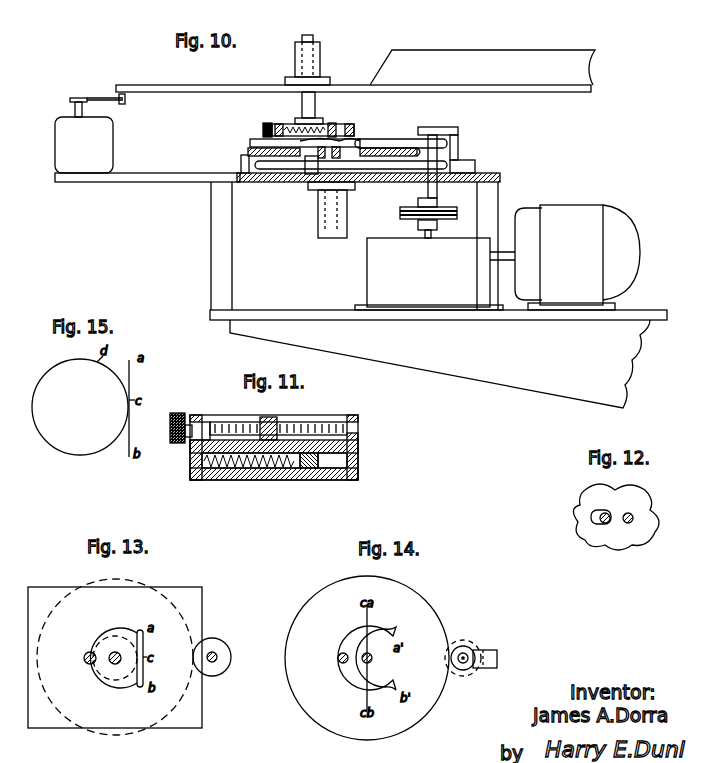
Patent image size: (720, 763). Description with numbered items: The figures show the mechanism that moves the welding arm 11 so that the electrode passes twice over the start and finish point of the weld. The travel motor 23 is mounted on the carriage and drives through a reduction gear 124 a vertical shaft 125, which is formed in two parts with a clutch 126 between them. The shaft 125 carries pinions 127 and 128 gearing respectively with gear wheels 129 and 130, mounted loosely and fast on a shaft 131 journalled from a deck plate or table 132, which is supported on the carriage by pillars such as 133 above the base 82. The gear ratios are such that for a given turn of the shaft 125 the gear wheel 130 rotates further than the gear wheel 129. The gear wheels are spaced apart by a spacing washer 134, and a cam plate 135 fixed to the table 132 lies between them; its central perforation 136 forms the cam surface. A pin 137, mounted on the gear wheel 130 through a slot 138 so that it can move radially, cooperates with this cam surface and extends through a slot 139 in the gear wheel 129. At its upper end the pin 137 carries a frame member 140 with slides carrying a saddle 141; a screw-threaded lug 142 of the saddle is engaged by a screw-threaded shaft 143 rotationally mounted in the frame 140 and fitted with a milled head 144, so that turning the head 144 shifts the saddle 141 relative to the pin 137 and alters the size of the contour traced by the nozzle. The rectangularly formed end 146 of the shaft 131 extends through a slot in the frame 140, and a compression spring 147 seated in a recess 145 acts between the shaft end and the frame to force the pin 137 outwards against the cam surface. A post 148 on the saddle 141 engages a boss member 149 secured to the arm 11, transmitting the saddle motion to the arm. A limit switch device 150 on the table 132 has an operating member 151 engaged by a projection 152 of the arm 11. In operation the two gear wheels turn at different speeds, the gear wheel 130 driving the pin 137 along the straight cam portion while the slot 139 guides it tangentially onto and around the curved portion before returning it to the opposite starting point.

In FIG. 10, the arm 11 is at (557, 53).
In FIG. 10, the travel motor 23 is at (578, 265).
In FIG. 10, the base 82 is at (570, 375).
In FIG. 10, the reduction gear 124 is at (445, 284).
In FIG. 10, the vertical shaft 125 is at (433, 193).
In FIG. 13, the vertical shaft 125 is at (215, 653).
In FIG. 10, the clutch 126 is at (402, 209).
In FIG. 10, the pinion 127 is at (447, 143).
In FIG. 14, the pinion 127 is at (465, 651).
In FIG. 10, the pinion 128 is at (447, 165).
In FIG. 13, the pinion 128 is at (218, 675).
In FIG. 14, the pinion 128 is at (470, 670).
In FIG. 10, the gear wheel 129 is at (258, 143).
In FIG. 14, the gear wheel 129 is at (343, 706).
In FIG. 10, the gear wheel 130 is at (283, 166).
In FIG. 12, the gear wheel 130 is at (645, 500).
In FIG. 13, the gear wheel 130 is at (100, 590).
In FIG. 10, the shaft 131 is at (328, 178).
In FIG. 12, the shaft 131 is at (640, 524).
In FIG. 13, the shaft 131 is at (113, 652).
In FIG. 14, the shaft 131 is at (367, 658).
In FIG. 10, the deck plate or table 132 is at (135, 182).
In FIG. 10, the pillar 133 is at (496, 194).
In FIG. 10, the spacing washer 134 is at (348, 142).
In FIG. 10, the cam plate 135 is at (244, 157).
In FIG. 13, the cam plate 135 is at (200, 600).
In FIG. 13, the central perforation 136 is at (100, 680).
In FIG. 10, the pin 137 is at (266, 138).
In FIG. 11, the pin 137 is at (236, 470).
In FIG. 12, the pin 137 is at (603, 522).
In FIG. 13, the pin 137 is at (87, 657).
In FIG. 14, the pin 137 is at (338, 658).
In FIG. 12, the slot 138 is at (597, 512).
In FIG. 14, the slot 139 is at (357, 636).
In FIG. 10, the frame member 140 is at (300, 124).
In FIG. 11, the frame member 140 is at (358, 447).
In FIG. 10, the saddle 141 is at (320, 124).
In FIG. 11, the screw-threaded lug 142 is at (262, 418).
In FIG. 11, the screw-threaded shaft 143 is at (323, 422).
In FIG. 11, the milled head 144 is at (175, 412).
In FIG. 11, the cavity 145 is at (340, 470).
In FIG. 11, the rectangularly formed end 146 is at (309, 470).
In FIG. 10, the compression spring 147 is at (285, 126).
In FIG. 11, the compression spring 147 is at (283, 470).
In FIG. 10, the post 148 is at (300, 41).
In FIG. 10, the boss member 149 is at (321, 56).
In FIG. 10, the limit switch device 150 is at (58, 143).
In FIG. 10, the operating member 151 is at (95, 98).
In FIG. 10, the projection 152 is at (122, 102).